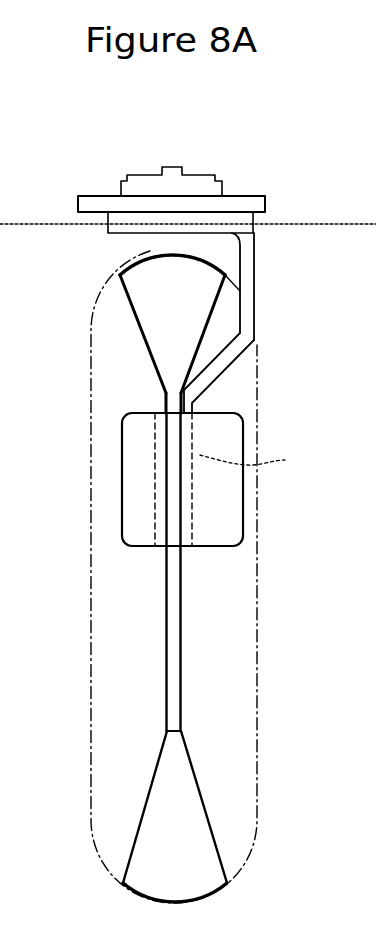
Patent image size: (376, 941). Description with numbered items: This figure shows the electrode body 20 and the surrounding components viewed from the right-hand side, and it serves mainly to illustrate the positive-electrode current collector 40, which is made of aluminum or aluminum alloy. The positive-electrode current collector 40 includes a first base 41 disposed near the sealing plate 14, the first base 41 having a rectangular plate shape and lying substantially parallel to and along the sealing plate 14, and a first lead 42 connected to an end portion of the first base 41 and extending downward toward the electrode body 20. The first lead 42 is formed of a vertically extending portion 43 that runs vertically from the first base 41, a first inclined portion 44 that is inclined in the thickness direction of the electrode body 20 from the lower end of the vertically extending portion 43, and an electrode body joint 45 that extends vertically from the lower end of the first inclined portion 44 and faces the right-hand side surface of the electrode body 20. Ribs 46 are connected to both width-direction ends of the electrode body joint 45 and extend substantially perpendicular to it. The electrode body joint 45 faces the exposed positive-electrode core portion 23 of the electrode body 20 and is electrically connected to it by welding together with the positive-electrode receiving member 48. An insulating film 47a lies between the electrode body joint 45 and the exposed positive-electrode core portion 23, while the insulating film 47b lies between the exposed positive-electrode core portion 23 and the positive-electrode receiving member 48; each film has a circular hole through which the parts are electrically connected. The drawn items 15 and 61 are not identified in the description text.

The sealing plate 14 is at (248, 195).
The connector 15 is at (168, 165).
The first base 41 is at (122, 220).
The holder 61 is at (192, 218).
The positive-electrode current collector 40 is at (256, 389).
The first lead 42 is at (258, 325).
The vertically extending portion 43 is at (258, 258).
The first inclined portion 44 is at (197, 373).
The electrode body joint 45 is at (259, 457).
The ribs 46 is at (213, 510).
The insulating film 47a is at (188, 358).
The insulating film 47b is at (163, 400).
The positive-electrode receiving member 48 is at (132, 488).
The electrode body 20 is at (182, 637).
The exposed positive-electrode core portion 23 is at (182, 592).